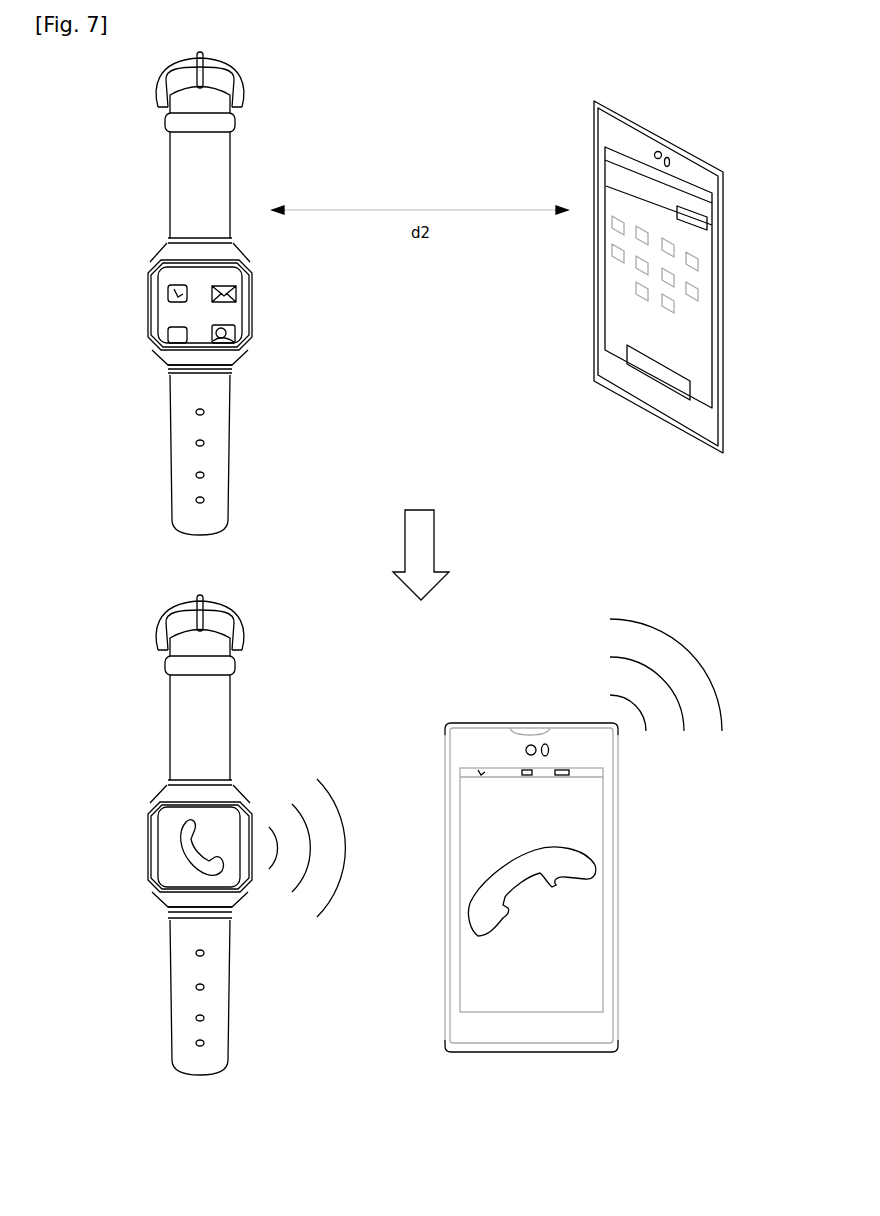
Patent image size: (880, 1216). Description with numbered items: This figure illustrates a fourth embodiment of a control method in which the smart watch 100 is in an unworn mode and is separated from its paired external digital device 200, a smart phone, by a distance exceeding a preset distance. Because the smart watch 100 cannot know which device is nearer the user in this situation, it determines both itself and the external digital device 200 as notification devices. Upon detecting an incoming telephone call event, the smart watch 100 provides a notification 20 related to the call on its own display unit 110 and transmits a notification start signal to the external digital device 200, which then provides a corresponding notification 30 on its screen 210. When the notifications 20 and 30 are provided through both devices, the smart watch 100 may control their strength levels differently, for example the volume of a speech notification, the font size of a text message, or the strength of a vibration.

The smart watch 100 is at (149, 840).
The display unit 110 is at (232, 830).
The notification 20 is at (200, 852).
The external digital device 200 is at (698, 157).
The display unit of mobile terminal 210 is at (603, 817).
The notification 30 is at (558, 870).